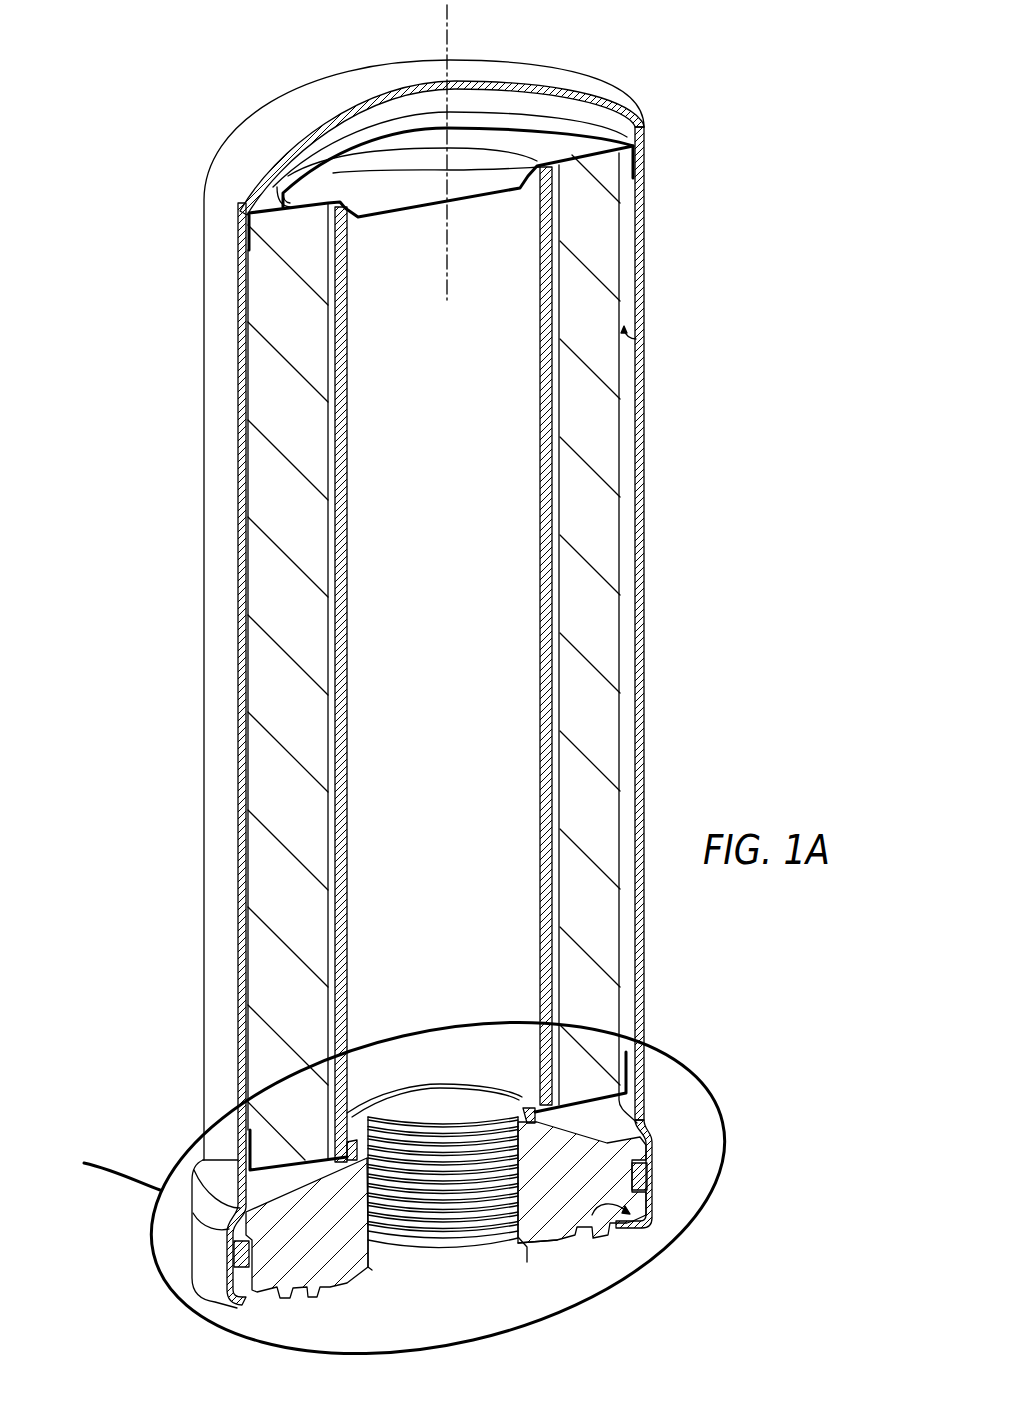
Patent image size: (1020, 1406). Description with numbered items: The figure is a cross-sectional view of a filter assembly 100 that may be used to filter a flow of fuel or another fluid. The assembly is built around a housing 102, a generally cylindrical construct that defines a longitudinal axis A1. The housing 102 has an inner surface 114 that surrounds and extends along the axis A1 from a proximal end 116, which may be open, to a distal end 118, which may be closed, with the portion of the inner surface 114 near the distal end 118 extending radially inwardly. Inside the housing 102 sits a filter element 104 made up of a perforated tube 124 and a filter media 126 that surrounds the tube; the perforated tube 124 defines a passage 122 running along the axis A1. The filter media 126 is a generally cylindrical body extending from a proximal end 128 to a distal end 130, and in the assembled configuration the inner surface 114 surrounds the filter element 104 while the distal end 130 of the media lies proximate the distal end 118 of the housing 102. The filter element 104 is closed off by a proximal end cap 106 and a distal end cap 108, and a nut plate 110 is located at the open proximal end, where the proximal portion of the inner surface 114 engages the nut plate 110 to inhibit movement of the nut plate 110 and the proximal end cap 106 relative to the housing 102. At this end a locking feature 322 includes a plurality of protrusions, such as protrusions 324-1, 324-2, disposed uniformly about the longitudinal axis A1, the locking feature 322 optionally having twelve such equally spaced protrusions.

The filter assembly 100 is at (733, 45).
The housing 102 is at (205, 333).
The filter element 104 is at (620, 428).
The proximal end cap 106 is at (632, 1090).
The distal end cap 108 is at (549, 128).
The nut plate 110 is at (300, 1222).
The inner surface 114 is at (640, 352).
The proximal end 116 is at (613, 1225).
The distal end 118 is at (375, 72).
The passage 122 is at (390, 242).
The perforated tube 124 is at (560, 535).
The filter media 126 is at (622, 300).
The proximal end 128 is at (650, 1123).
The distal end 130 is at (280, 200).
The locking feature 322 is at (568, 1240).
The protrusion 324-1 is at (243, 1295).
The protrusion 324-2 is at (650, 1225).
The longitudinal axis A1 is at (447, 30).